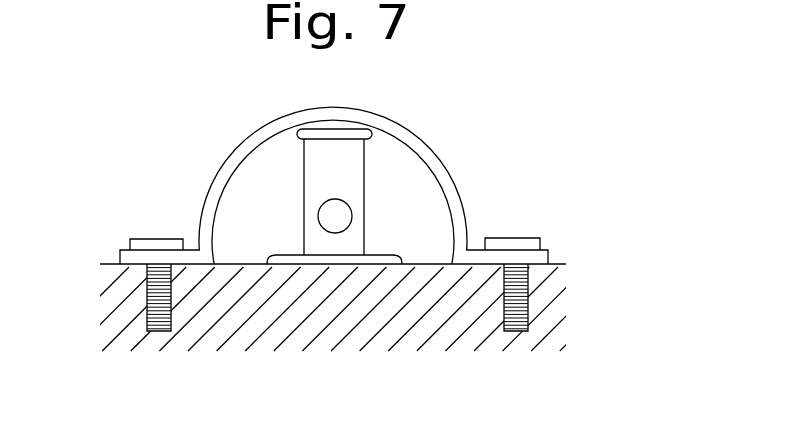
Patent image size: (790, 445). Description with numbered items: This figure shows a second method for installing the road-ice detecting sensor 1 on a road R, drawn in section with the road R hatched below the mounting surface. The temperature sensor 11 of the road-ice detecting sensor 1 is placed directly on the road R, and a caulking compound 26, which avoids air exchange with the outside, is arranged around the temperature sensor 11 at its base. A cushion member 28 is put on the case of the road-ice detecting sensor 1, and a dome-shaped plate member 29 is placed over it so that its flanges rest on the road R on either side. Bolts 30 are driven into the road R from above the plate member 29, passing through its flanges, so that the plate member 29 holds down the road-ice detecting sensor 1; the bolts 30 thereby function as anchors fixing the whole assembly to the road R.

The road-ice detecting sensor 1 is at (366, 218).
The temperature sensor 11 is at (343, 267).
The caulking compound 26 is at (393, 253).
The cushion member 28 is at (355, 131).
The plate member 29 is at (238, 148).
The bolts 30 is at (587, 209).
The road R is at (110, 262).